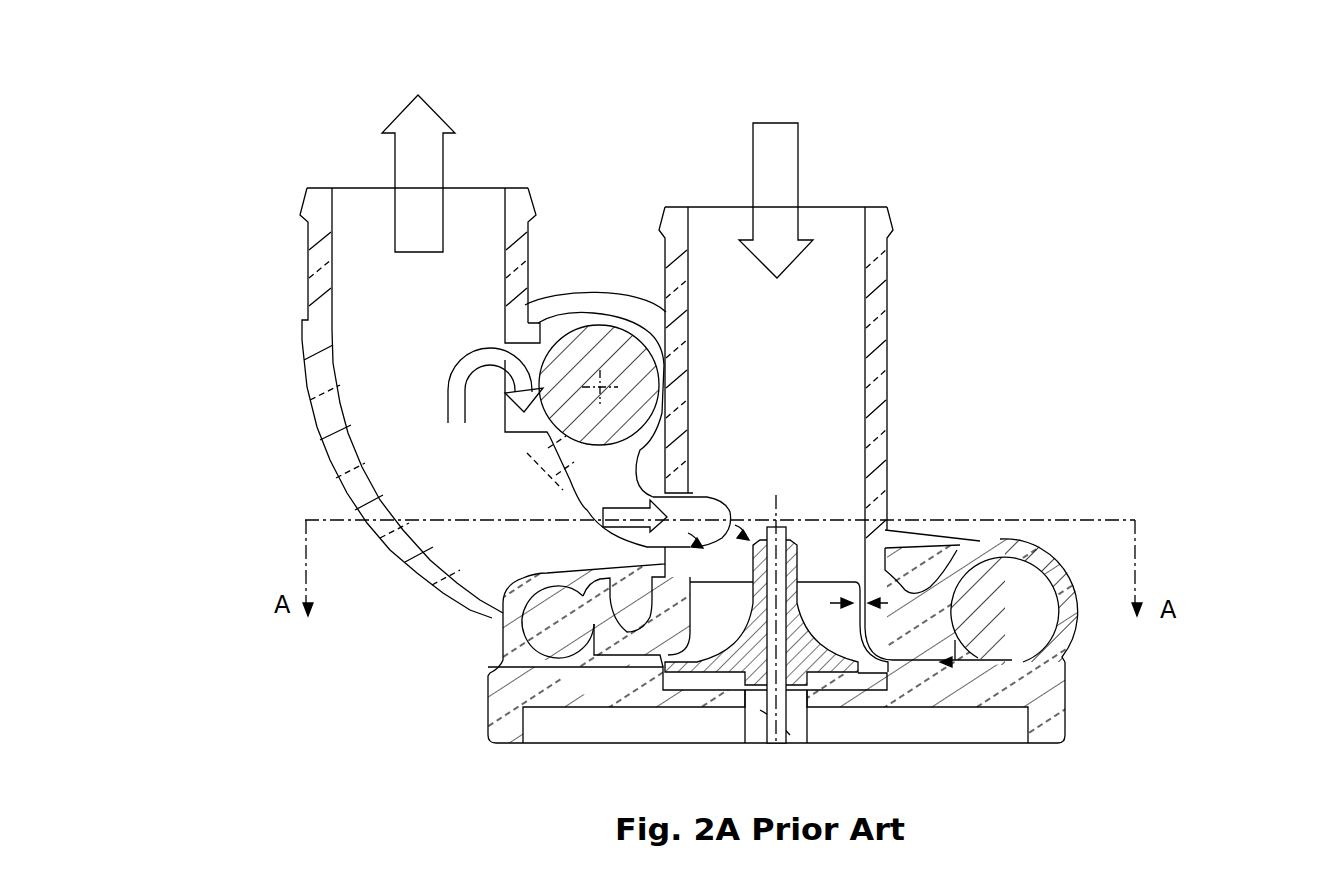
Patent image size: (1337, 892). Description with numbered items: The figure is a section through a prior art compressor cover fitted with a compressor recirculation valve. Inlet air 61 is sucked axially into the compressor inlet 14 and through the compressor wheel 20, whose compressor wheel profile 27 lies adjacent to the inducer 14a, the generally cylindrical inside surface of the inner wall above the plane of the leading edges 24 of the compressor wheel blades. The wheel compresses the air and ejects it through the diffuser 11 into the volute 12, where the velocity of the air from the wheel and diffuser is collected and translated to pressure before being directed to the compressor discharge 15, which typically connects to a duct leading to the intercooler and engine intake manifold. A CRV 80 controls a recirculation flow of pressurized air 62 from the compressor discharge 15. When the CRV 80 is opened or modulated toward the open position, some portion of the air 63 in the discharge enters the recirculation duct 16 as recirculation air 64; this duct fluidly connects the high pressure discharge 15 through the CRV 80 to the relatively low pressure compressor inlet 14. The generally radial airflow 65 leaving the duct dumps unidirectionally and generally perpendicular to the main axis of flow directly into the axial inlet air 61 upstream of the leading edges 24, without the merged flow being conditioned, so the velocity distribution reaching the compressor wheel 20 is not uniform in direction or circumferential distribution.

The diffuser 11 is at (1080, 615).
The volute 12 is at (998, 610).
The compressor inlet 14 is at (838, 337).
The inducer 14a is at (932, 586).
The compressor discharge 15 is at (448, 290).
The recirculation duct 16 is at (623, 465).
The compressor wheel 20 is at (867, 655).
The compressor wheel leading edge 24 is at (830, 580).
The compressor wheel profile 27 is at (688, 620).
The inlet air 61 is at (777, 237).
The recirculation flow of pressurized air 62 is at (435, 156).
The air in the compressor discharge 63 is at (462, 366).
The recirculation air 64 is at (630, 512).
The generally radial airflow 65 is at (690, 547).
The CRV 80 is at (597, 355).